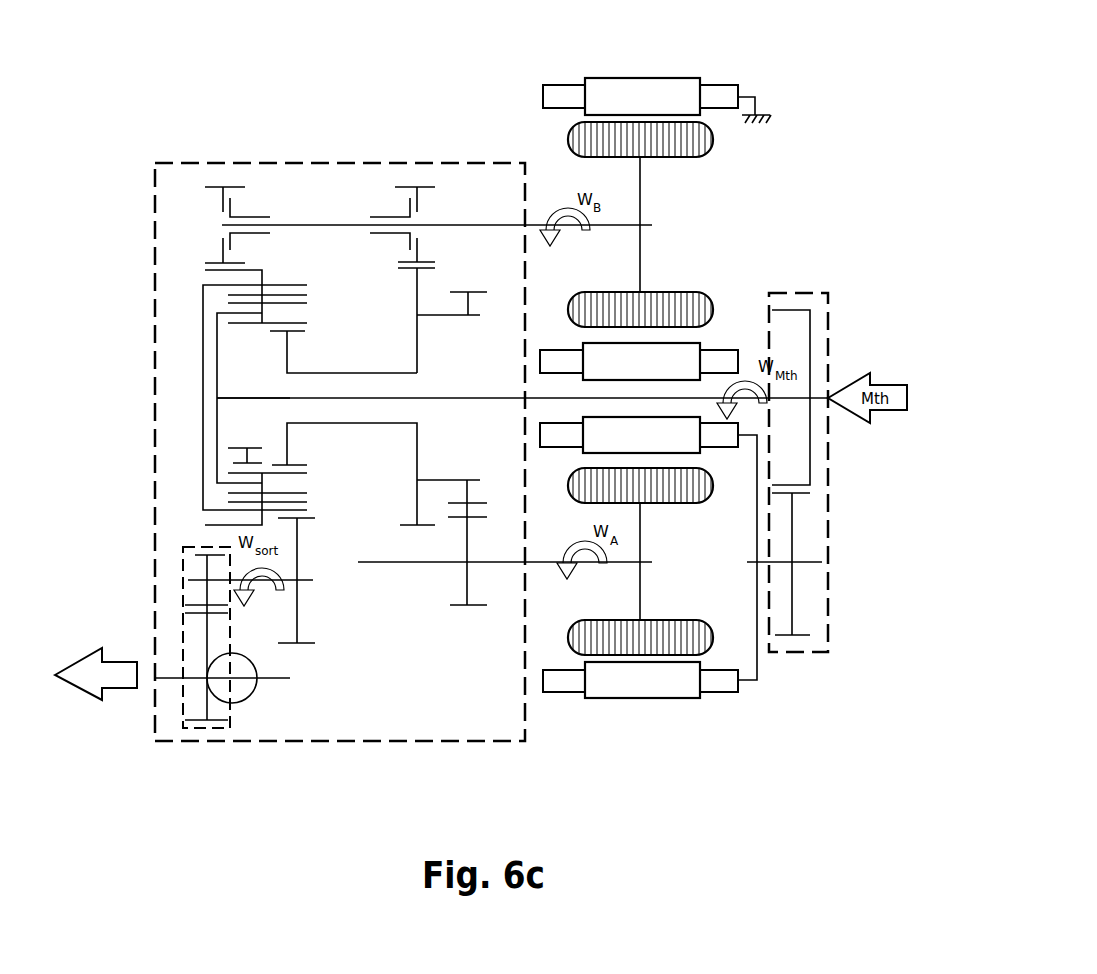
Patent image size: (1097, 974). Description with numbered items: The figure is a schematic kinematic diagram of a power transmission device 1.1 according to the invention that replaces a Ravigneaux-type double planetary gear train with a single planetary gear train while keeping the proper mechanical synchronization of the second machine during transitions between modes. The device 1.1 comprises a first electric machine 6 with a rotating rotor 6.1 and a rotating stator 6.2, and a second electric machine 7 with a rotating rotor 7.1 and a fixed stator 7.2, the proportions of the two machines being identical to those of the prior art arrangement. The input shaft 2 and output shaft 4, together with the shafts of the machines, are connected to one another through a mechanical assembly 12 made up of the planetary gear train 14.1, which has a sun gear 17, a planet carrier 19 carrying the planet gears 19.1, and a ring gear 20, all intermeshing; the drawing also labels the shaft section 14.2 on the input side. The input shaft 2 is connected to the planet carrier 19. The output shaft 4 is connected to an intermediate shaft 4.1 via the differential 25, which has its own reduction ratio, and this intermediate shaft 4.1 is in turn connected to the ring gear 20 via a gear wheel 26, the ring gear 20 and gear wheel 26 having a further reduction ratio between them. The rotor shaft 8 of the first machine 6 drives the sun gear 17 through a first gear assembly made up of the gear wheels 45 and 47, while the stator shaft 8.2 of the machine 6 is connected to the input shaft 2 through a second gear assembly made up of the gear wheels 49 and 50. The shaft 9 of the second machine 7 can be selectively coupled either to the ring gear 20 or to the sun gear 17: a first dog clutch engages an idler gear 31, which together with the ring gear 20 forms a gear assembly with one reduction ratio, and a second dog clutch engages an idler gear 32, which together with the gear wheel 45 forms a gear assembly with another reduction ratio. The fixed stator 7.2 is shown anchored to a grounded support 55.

The device 1.1 is at (366, 95).
The mechanical assembly 12 is at (150, 255).
The input shaft 2 is at (793, 398).
The output shaft 4 is at (196, 679).
The intermediate shaft 4.1 is at (250, 613).
The first electric machine 6 is at (675, 561).
The rotating rotor 6.1 is at (568, 487).
The stator 6.2 is at (725, 692).
The second electric machine 7 is at (675, 224).
The rotating rotor 7.1 is at (692, 157).
The fixed stator 7.2 is at (555, 85).
The rotor shaft 8 is at (545, 565).
The stator shaft 8.2 is at (805, 562).
The shaft 9 is at (607, 228).
The planetary gear train 14.1 is at (341, 352).
The planetary gear set element 14.2 is at (186, 405).
The sun gear 17 is at (290, 435).
The planet carrier 19 is at (217, 437).
The planet gears 19.1 is at (262, 313).
The ring gear 20 is at (203, 337).
The differential 25 is at (232, 710).
The gear wheel 26 is at (297, 623).
The idler gear 31 is at (222, 195).
The idler gear 32 is at (420, 196).
The gear wheel 45 is at (417, 467).
The gear wheel 47 is at (465, 580).
The gear wheel 49 is at (812, 472).
The gear wheel 50 is at (793, 600).
The fixed support 55 is at (757, 108).